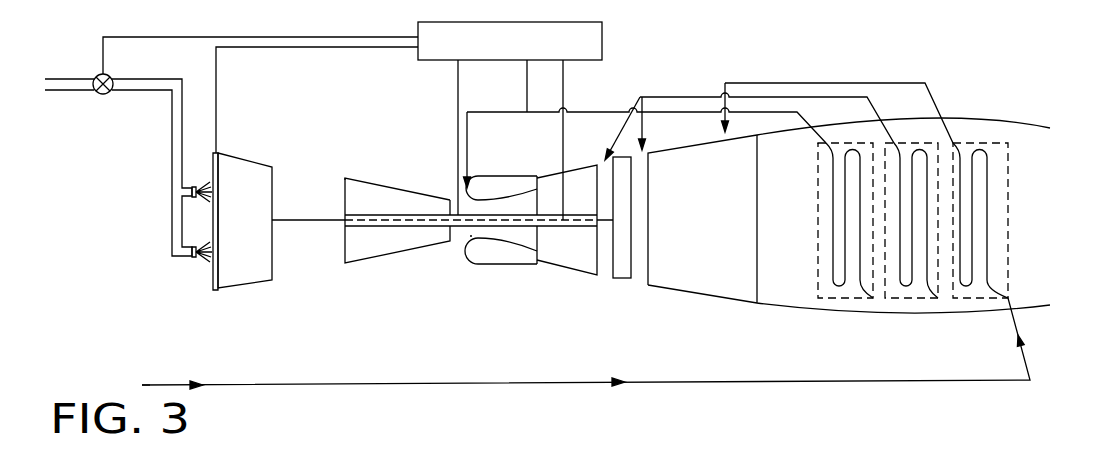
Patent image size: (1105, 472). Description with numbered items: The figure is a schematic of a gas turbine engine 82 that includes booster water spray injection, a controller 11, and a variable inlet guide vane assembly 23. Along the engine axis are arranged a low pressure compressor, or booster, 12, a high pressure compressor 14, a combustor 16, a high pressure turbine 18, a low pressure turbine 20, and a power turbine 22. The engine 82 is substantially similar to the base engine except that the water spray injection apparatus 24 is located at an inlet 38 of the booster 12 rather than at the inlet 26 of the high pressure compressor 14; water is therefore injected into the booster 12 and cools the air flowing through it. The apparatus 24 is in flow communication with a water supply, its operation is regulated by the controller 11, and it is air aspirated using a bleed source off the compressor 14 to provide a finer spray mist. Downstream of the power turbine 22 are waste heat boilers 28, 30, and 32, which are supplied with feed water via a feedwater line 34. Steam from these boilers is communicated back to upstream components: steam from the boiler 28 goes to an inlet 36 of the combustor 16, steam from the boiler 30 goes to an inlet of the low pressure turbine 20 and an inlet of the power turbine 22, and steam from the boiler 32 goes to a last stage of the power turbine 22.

The controller 11 is at (605, 40).
The low pressure compressor 12 is at (267, 158).
The high pressure compressor 14 is at (388, 260).
The combustor 16 is at (496, 174).
The high pressure turbine 18 is at (576, 272).
The low pressure turbine 20 is at (618, 280).
The power turbine 22 is at (695, 297).
The variable inlet guide vane assembly 23 is at (217, 289).
The water injection apparatus 24 is at (172, 143).
The inlet of high pressure compressor 26 is at (333, 177).
The waste heat boiler 28 is at (818, 212).
The waste heat boiler 30 is at (911, 298).
The waste heat boiler 32 is at (1010, 210).
The feedwater line 34 is at (573, 383).
The inlet of combustor 36 is at (468, 238).
The inlet of low pressure compressor 38 is at (212, 274).
The engine 82 is at (1027, 108).